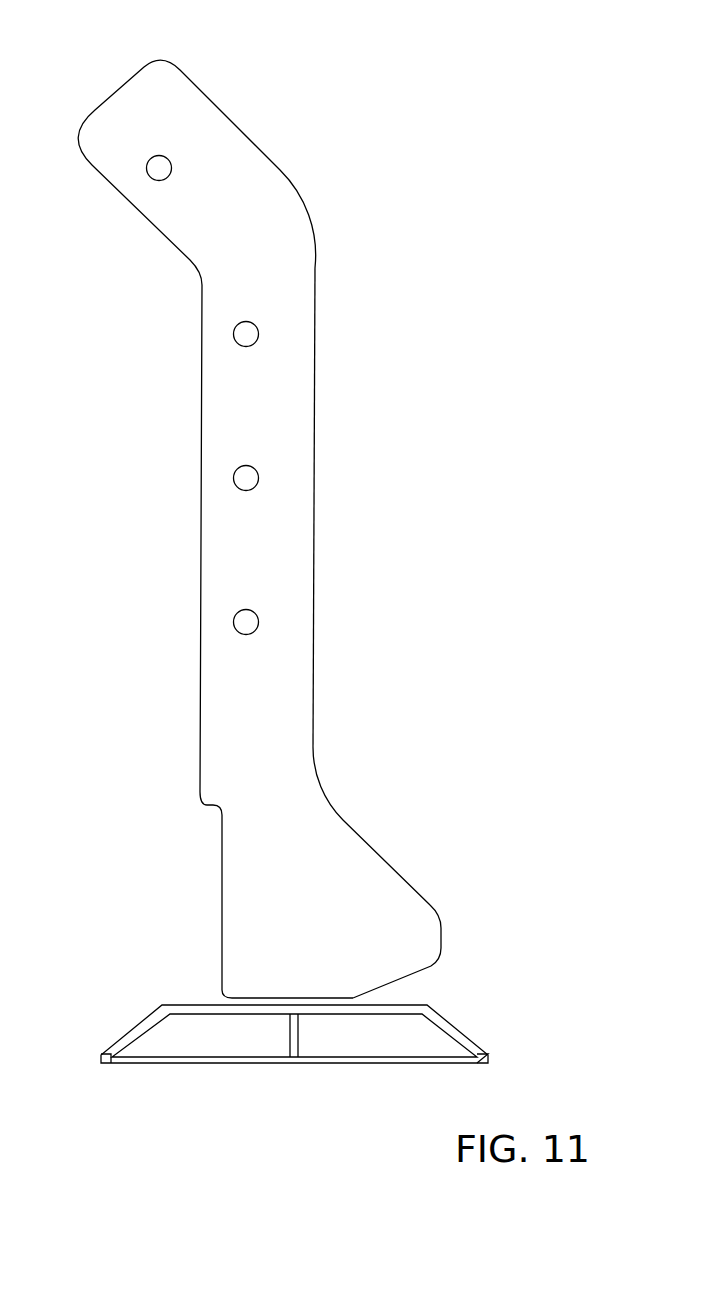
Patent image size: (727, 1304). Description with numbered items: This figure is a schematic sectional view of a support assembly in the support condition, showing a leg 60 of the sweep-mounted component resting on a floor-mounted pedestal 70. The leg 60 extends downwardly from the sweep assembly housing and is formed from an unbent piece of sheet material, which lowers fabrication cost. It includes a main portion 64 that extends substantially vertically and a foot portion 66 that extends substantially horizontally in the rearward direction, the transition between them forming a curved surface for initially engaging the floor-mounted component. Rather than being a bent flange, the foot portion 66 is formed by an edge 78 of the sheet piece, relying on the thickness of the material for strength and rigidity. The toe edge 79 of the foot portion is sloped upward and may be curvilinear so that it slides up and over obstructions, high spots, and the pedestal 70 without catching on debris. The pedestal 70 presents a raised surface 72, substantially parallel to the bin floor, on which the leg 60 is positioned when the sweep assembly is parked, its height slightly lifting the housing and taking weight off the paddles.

The leg 60 is at (292, 400).
The main portion 64 is at (292, 570).
The foot portion 66 is at (345, 875).
The pedestal 70 is at (270, 1038).
The raised surface 72 is at (182, 1005).
The edge 78 is at (267, 1000).
The toe edge 79 is at (397, 982).